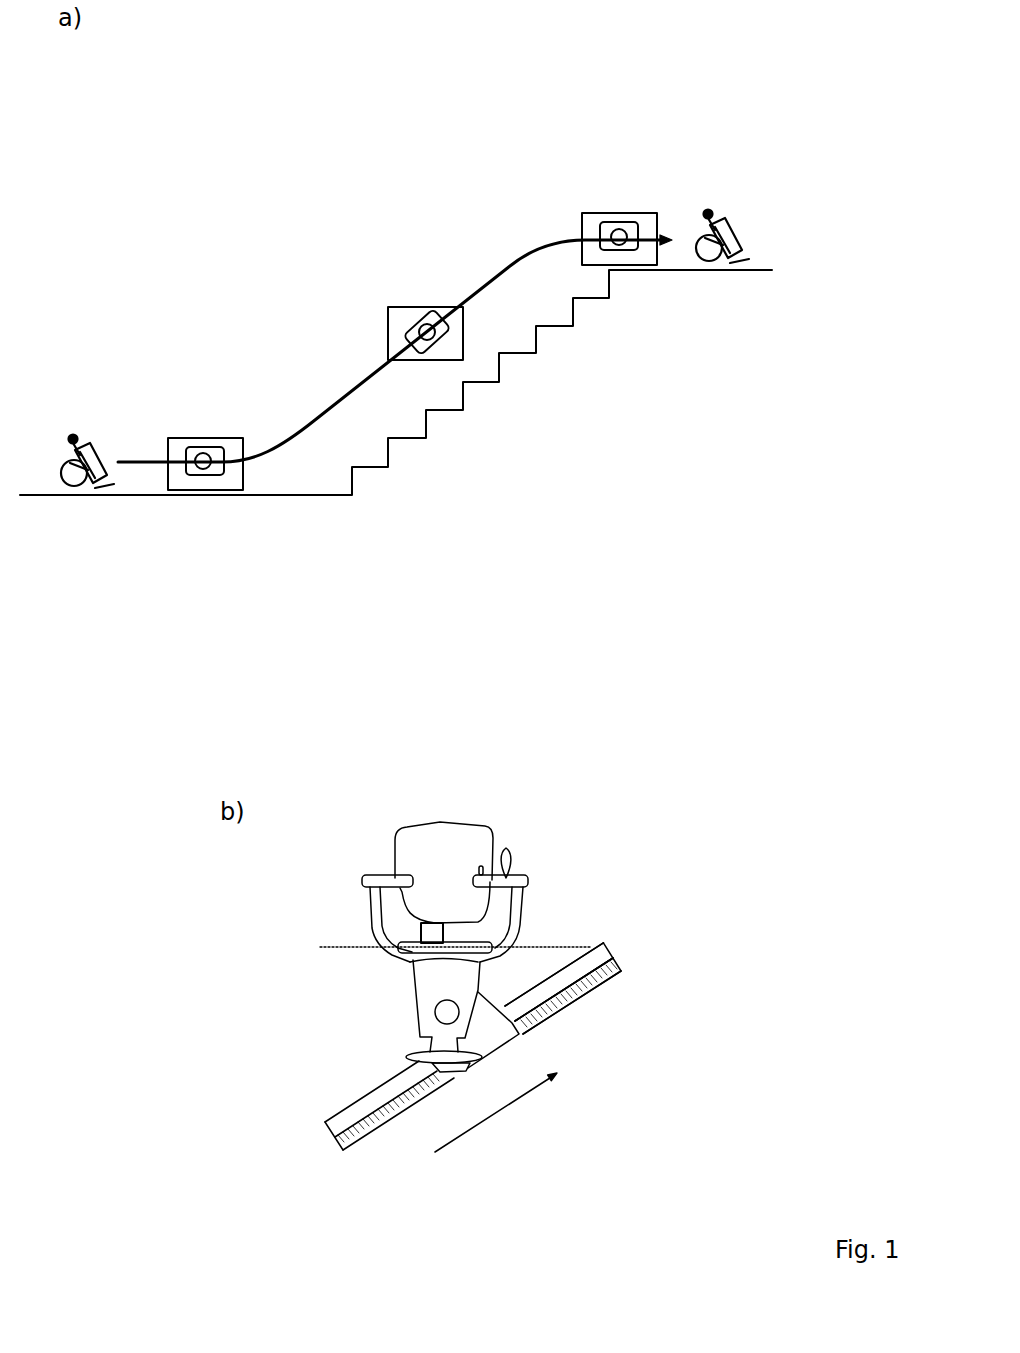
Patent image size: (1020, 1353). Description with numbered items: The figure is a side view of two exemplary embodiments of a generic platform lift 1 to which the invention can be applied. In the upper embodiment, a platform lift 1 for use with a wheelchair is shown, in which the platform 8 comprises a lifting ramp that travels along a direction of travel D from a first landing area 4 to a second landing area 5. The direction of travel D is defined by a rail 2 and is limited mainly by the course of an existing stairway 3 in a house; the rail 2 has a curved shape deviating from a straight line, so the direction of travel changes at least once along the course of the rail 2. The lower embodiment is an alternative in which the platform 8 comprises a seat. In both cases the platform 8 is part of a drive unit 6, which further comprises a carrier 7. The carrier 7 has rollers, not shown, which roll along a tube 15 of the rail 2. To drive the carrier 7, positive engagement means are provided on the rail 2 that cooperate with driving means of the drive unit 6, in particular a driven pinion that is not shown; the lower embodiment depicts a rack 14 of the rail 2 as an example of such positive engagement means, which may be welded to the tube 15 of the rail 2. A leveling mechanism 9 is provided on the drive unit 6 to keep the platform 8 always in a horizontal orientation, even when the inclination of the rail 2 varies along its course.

The platform lift 1 is at (672, 89).
The rail 2 is at (547, 246).
The stairway 3 is at (575, 314).
The first landing area 4 is at (122, 416).
The second landing area 5 is at (708, 183).
The drive unit 6 is at (356, 299).
The carrier 7 is at (448, 332).
The platform 8 is at (390, 342).
The leveling mechanism 9 is at (422, 322).
The rack 14 is at (613, 965).
The tube 15 is at (605, 949).
The direction of travel D is at (328, 410).